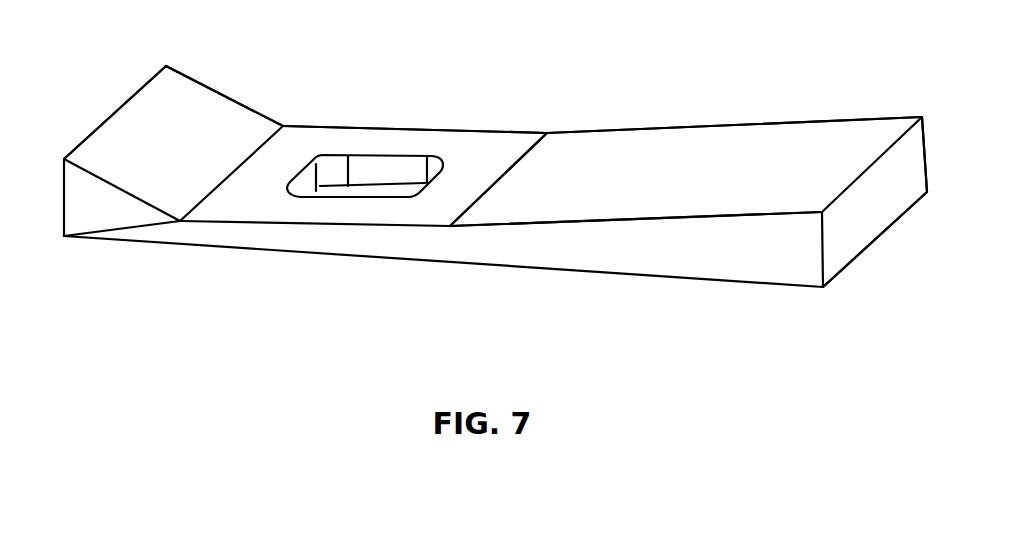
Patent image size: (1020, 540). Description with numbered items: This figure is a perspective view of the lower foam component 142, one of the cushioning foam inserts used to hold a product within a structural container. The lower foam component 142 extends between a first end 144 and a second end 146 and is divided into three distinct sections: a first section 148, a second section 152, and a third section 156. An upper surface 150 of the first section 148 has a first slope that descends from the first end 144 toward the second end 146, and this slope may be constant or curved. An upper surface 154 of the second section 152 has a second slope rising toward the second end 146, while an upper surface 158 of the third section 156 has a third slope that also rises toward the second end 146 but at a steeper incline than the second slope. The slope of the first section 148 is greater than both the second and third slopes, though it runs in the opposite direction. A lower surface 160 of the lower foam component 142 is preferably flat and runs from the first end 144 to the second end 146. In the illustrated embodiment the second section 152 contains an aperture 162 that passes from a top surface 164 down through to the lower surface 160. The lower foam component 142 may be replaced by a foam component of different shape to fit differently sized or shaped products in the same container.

The lower foam component 142 is at (223, 264).
The first end 144 is at (70, 210).
The second end 146 is at (834, 249).
The first section 148 is at (168, 103).
The upper surface 150 is at (198, 113).
The second section 152 is at (341, 125).
The upper surface 154 is at (468, 146).
The third section 156 is at (667, 147).
The upper surface 158 is at (752, 145).
The lower surface 160 is at (405, 263).
The aperture 162 is at (330, 188).
The top surface 164 is at (434, 205).